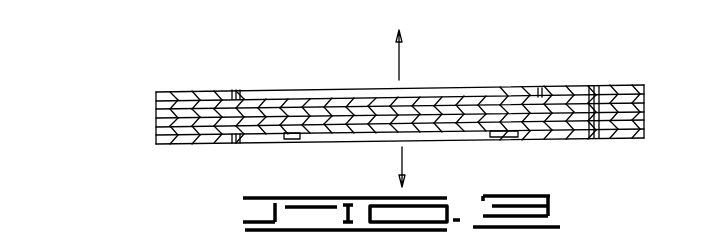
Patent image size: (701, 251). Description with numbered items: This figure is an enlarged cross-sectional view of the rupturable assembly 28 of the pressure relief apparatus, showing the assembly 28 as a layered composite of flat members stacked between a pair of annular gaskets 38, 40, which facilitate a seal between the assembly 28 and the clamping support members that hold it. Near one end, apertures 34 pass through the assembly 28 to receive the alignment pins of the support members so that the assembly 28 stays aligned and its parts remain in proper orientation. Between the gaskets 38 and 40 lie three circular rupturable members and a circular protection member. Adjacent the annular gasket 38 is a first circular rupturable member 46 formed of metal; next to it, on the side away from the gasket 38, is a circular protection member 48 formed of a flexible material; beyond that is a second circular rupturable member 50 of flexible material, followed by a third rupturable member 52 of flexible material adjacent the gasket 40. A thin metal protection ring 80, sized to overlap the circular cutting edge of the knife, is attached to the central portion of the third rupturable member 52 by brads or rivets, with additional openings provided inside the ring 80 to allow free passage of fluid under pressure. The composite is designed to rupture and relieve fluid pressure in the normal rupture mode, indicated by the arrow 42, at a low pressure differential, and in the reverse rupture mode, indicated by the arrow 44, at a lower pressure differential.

The assembly 28 is at (333, 96).
The apertures 34 is at (598, 90).
The annular gasket 38 is at (153, 94).
The annular gasket 40 is at (153, 141).
The arrow 42 is at (400, 67).
The arrow 44 is at (403, 162).
The first circular rupturable member 46 is at (153, 104).
The circular protection member 48 is at (153, 112).
The second circular rupturable member 50 is at (153, 122).
The third rupturable member 52 is at (153, 131).
The thin metal protection ring 80 is at (289, 140).